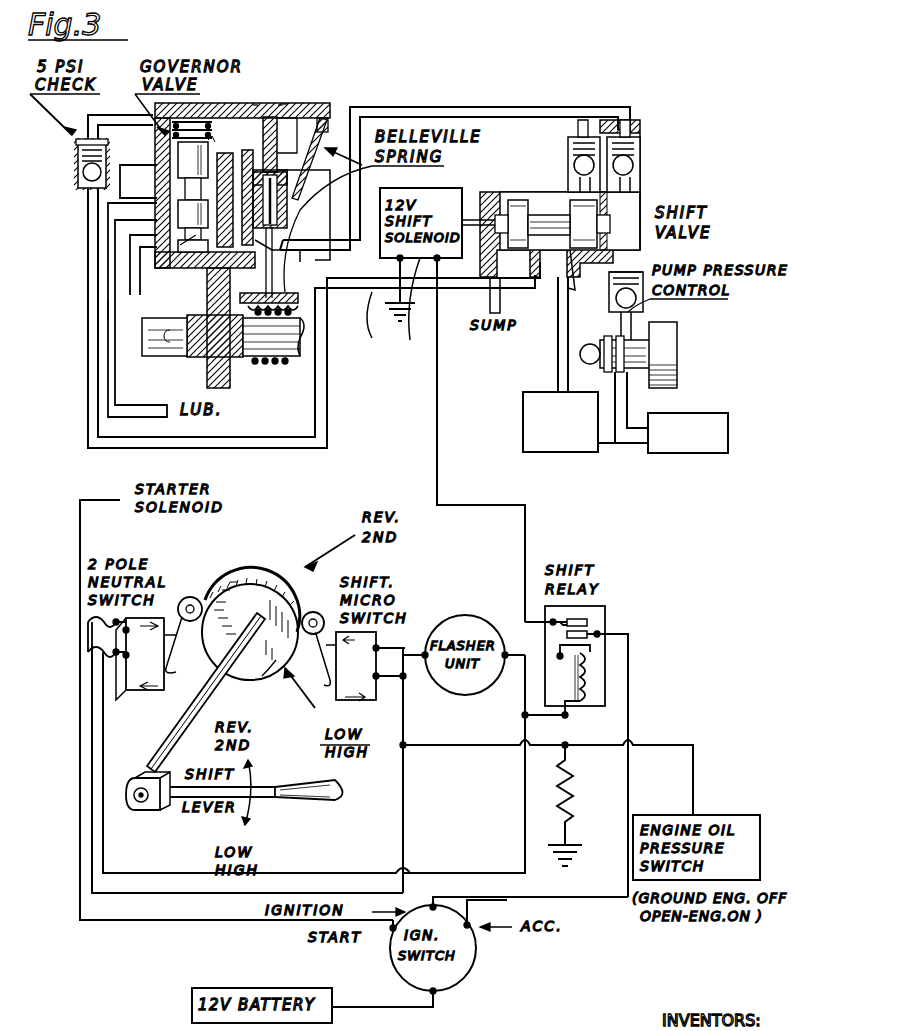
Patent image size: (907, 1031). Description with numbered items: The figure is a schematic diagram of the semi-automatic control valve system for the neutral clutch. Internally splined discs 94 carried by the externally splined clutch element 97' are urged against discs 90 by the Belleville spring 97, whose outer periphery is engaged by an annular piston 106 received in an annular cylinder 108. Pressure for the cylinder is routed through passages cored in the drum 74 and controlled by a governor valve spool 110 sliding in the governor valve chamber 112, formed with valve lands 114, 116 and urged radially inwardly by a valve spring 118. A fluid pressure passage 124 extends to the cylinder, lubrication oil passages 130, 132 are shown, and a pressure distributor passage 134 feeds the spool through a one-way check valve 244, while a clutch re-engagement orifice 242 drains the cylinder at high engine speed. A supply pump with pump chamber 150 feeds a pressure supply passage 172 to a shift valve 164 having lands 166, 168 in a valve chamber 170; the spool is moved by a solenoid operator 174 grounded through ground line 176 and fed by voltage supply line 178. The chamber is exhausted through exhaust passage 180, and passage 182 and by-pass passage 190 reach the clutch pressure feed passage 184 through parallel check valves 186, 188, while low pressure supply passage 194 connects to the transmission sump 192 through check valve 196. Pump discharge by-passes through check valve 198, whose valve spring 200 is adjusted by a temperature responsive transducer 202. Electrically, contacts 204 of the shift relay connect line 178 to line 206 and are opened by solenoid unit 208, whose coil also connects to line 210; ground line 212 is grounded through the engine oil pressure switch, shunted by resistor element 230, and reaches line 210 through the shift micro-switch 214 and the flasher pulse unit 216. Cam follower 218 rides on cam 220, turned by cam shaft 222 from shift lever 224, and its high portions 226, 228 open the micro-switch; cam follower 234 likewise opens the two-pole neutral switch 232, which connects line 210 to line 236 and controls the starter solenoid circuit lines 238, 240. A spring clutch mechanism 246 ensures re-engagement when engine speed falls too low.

The drum 74 is at (285, 104).
The discs 90 is at (280, 218).
The internally splined discs 94 is at (298, 298).
The spring 97 is at (304, 159).
The externally splined clutch element 97' is at (310, 320).
The annular piston 106 is at (280, 105).
The annular cylinder 108 is at (255, 105).
The governor valve spool 110 is at (185, 228).
The governor valve chamber 112 is at (210, 140).
The valve land 114 is at (185, 204).
The valve land 116 is at (185, 240).
The valve spring 118 is at (215, 120).
The fluid pressure passage 124 is at (282, 203).
The lubrication oil passage 130 is at (180, 172).
The lubrication oil passage 132 is at (140, 265).
The pressure distributor passage 134 is at (100, 250).
The pump chamber 150 is at (523, 405).
The shift valve 164 is at (565, 255).
The valve land 166 is at (518, 205).
The valve land 168 is at (642, 195).
The valve chamber 170 is at (632, 215).
The pressure supply passage 172 is at (555, 340).
The solenoid operator 174 is at (402, 310).
The ground line 176 is at (380, 312).
The voltage supply line 178 is at (437, 388).
The exhaust passage 180 is at (490, 300).
The passage 182 is at (645, 165).
The clutch pressure feed passage 184 is at (590, 103).
The one-way check valve 186 is at (640, 145).
The second check valve 188 is at (572, 158).
The by-pass passage 190 is at (580, 188).
The transmission sump 192 is at (700, 453).
The low pressure supply passage 194 is at (636, 400).
The one-way check valve 196 is at (620, 315).
The one-way check valve 198 is at (580, 354).
The valve spring 200 is at (600, 360).
The temperature responsive transducer 202 is at (678, 368).
The electrical contacts 204 is at (590, 617).
The line 206 is at (628, 680).
The solenoid unit 208 is at (590, 660).
The line 210 is at (525, 770).
The ground line 212 is at (478, 730).
The shift micro-switch 214 is at (400, 640).
The electrical potential pulse unit 216 is at (455, 625).
The cam follower 218 is at (320, 610).
The cam 220 is at (270, 578).
The cam shaft 222 is at (192, 713).
The shift lever 224 is at (168, 805).
The high portion 226 is at (258, 675).
The high portion 228 is at (242, 575).
The resistor element 230 is at (573, 786).
The two-pole neutral switch 232 is at (126, 608).
The cam follower 234 is at (196, 597).
The line 236 is at (92, 750).
The line 238 is at (80, 562).
The line 240 is at (80, 858).
The clutch re-engagement orifice 242 is at (175, 300).
The one-way check valve 244 is at (76, 158).
The spring clutch mechanism 246 is at (278, 362).